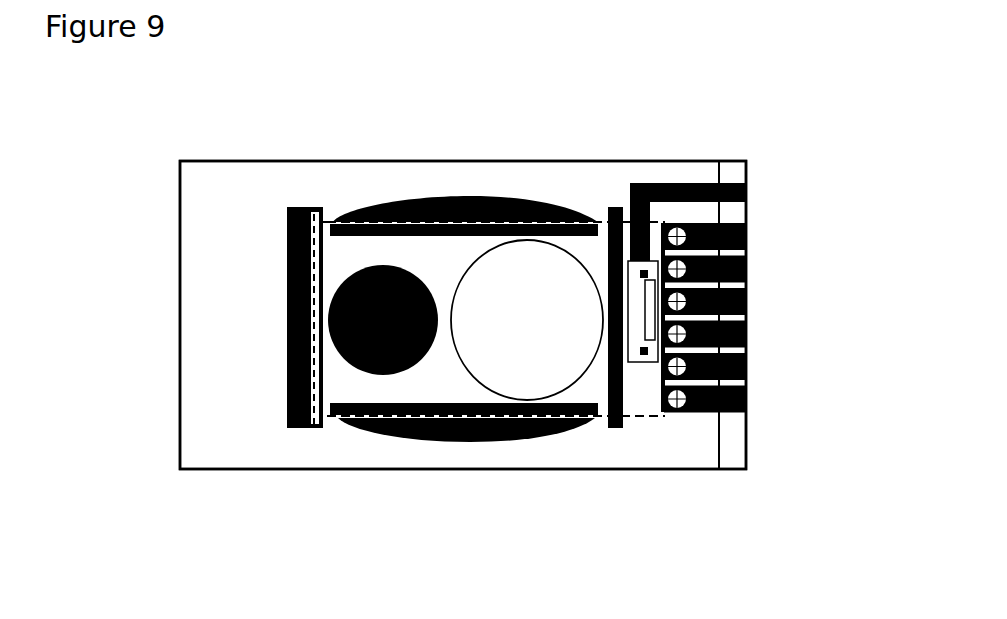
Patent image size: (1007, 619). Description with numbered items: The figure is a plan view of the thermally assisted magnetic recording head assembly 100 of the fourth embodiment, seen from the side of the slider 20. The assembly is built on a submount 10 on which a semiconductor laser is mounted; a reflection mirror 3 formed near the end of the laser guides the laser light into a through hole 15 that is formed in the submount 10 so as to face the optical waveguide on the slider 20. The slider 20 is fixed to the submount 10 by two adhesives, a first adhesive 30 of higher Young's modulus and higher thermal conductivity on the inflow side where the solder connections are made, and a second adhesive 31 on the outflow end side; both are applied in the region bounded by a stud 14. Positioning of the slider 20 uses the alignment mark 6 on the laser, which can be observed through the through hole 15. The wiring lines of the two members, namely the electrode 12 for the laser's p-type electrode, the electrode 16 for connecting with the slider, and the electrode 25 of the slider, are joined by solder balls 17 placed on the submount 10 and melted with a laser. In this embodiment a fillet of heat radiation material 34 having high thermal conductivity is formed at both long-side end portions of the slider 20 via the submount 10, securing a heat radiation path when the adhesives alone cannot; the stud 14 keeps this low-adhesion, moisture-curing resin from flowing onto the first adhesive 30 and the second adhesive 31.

The thermally assisted magnetic recording head assembly 100 is at (226, 154).
The submount 10 is at (178, 341).
The stud 14 is at (298, 430).
The first adhesive 30 is at (376, 274).
The second adhesive 31 is at (528, 272).
The heat radiation material 34 is at (448, 445).
The slider 20 is at (637, 417).
The through hole 15 is at (616, 220).
The electrode for connecting with p-type electrode of semiconductor laser 12 is at (745, 183).
The reflection mirror 3 is at (650, 300).
The alignment mark on semiconductor laser 6 is at (643, 360).
The electrode for connecting with slider 16 is at (746, 296).
The solder ball 17 is at (686, 232).
The electrode of slider 25 is at (670, 417).